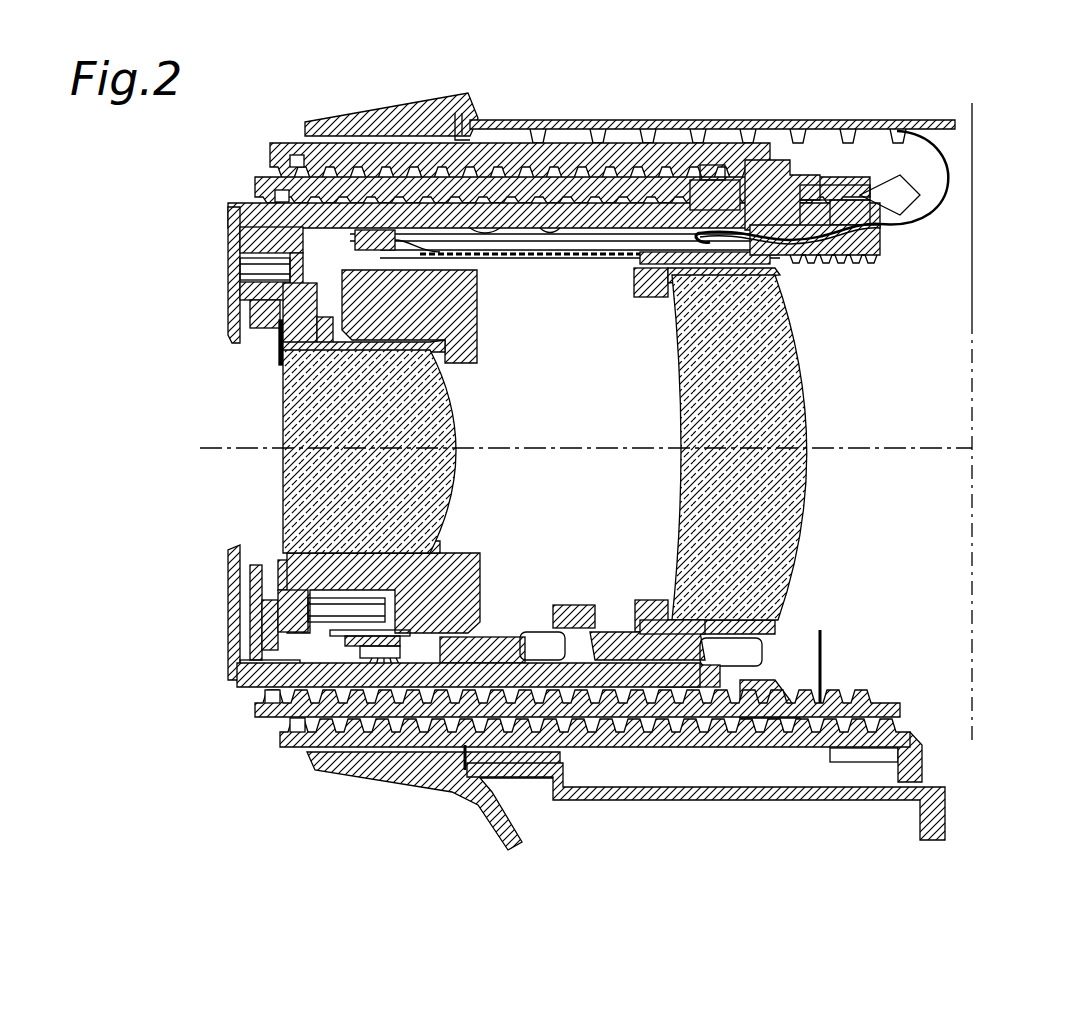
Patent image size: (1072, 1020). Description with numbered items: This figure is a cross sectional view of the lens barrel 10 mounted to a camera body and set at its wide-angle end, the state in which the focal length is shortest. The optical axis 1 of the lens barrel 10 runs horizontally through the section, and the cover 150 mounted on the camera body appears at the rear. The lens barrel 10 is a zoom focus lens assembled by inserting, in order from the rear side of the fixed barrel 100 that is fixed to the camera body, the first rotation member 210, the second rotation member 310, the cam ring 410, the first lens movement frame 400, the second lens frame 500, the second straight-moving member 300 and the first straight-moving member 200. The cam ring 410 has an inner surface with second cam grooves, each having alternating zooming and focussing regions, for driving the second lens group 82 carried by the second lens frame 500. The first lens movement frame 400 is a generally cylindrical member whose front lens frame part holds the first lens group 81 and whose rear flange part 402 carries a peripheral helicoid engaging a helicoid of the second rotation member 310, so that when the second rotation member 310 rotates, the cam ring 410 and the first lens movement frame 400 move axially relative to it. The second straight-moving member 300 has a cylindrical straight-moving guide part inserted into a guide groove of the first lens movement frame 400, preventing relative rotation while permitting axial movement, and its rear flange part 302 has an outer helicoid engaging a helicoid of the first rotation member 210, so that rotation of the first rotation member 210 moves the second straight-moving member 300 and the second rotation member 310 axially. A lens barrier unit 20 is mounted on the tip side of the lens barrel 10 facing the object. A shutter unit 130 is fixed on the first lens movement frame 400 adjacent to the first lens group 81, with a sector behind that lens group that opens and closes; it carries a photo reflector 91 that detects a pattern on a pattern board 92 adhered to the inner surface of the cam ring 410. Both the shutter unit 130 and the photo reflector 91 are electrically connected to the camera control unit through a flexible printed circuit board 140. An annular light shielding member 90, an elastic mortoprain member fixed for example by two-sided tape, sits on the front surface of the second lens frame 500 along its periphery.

The optical axis 1 is at (207, 448).
The lens barrel 10 is at (244, 128).
The lens barrier unit 20 is at (207, 326).
The first lens group 81 is at (437, 465).
The second lens group 82 is at (780, 478).
The light shielding member 90 is at (634, 286).
The photo reflector 91 is at (355, 650).
The pattern board 92 is at (390, 658).
The fixed barrel 100 is at (562, 800).
The shutter unit 130 is at (480, 343).
The flexible printed circuit board 140 is at (938, 212).
The cover 150 is at (420, 777).
The first straight-moving member 200 is at (830, 265).
The first rotation member 210 is at (293, 742).
The second straight-moving member 300 is at (787, 697).
The flange part 302 is at (740, 210).
The second rotation member 310 is at (283, 712).
The first lens movement frame 400 is at (742, 657).
The flange part 402 is at (705, 200).
The cam ring 410 is at (258, 676).
The second lens frame 500 is at (630, 638).